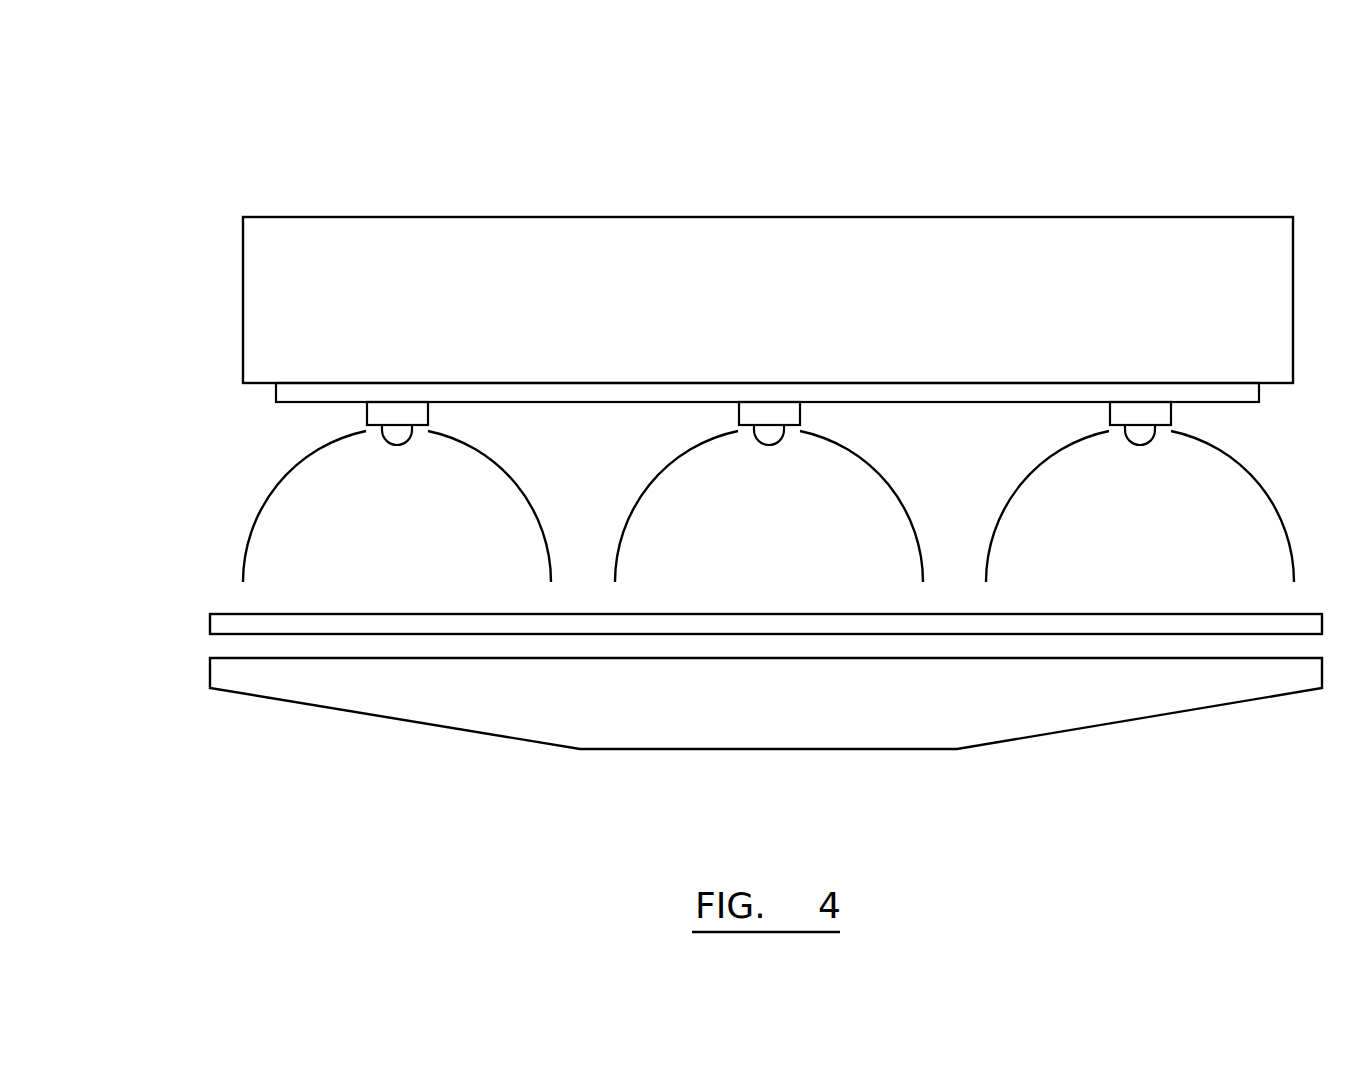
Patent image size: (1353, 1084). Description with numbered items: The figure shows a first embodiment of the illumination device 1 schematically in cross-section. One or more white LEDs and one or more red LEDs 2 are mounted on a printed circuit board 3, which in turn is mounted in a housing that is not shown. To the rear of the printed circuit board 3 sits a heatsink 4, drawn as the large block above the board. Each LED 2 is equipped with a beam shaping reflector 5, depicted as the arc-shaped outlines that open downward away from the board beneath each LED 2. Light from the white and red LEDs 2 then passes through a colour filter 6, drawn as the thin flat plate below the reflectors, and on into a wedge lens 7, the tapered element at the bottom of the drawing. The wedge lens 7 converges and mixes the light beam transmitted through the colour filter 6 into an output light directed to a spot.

The illumination device 1 is at (1240, 166).
The LED 2 is at (367, 415).
The printed circuit board 3 is at (282, 392).
The heatsink 4 is at (267, 302).
The beam shaping reflector 5 is at (252, 537).
The colour filter 6 is at (210, 620).
The wedge lens 7 is at (210, 670).